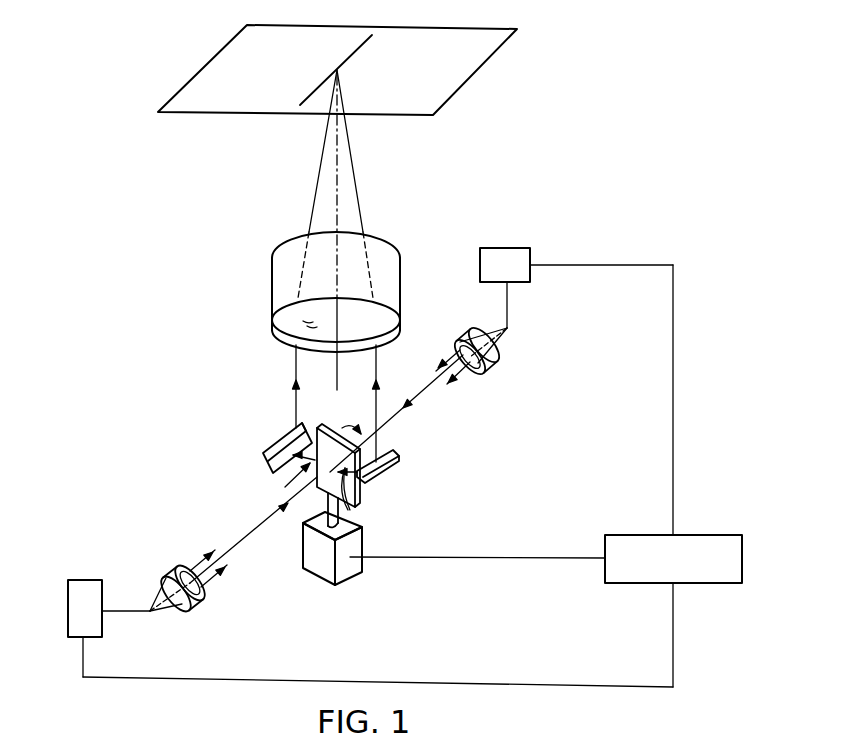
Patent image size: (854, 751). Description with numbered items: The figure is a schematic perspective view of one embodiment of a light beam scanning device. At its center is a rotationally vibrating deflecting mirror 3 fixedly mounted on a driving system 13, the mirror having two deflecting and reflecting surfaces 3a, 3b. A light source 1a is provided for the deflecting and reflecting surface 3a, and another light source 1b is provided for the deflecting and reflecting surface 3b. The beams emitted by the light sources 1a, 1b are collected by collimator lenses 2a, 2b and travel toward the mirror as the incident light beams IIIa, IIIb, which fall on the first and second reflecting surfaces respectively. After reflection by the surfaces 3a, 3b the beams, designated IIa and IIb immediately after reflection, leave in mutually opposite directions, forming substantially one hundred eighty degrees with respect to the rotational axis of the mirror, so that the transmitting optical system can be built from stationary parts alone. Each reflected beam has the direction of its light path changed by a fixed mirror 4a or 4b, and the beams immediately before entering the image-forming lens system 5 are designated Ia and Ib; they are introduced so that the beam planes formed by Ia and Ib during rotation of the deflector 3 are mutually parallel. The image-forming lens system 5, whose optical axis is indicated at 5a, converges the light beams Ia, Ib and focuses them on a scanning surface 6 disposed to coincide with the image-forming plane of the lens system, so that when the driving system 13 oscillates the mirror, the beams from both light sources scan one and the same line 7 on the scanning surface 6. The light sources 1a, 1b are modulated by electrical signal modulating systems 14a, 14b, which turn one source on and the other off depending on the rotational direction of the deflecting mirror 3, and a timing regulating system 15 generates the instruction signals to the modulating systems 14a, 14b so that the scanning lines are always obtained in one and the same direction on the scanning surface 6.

The light source 1a is at (510, 329).
The light source 1b is at (152, 613).
The collimator lens 2a is at (497, 364).
The collimator lens 2b is at (200, 597).
The deflecting mirror 3 is at (326, 428).
The deflecting and reflecting surface 3a is at (357, 455).
The deflecting and reflecting surface 3b is at (320, 494).
The fixed mirror 4a is at (396, 471).
The fixed mirror 4b is at (262, 463).
The image-forming lens system 5 is at (400, 268).
The optical axis / light beam 5a is at (337, 207).
The scanning surface 6 is at (470, 67).
The line 7 is at (360, 47).
The driving system 13 is at (347, 577).
The electrical signal modulating system 14a is at (527, 246).
The electrical signal modulating system 14b is at (68, 628).
The timing regulating system 15 is at (637, 578).
The light beam Ia is at (380, 359).
The light beam Ib is at (293, 363).
The light beam IIa is at (352, 512).
The light beam IIb is at (287, 479).
The light beam IIIa is at (417, 398).
The light beam IIIb is at (253, 527).